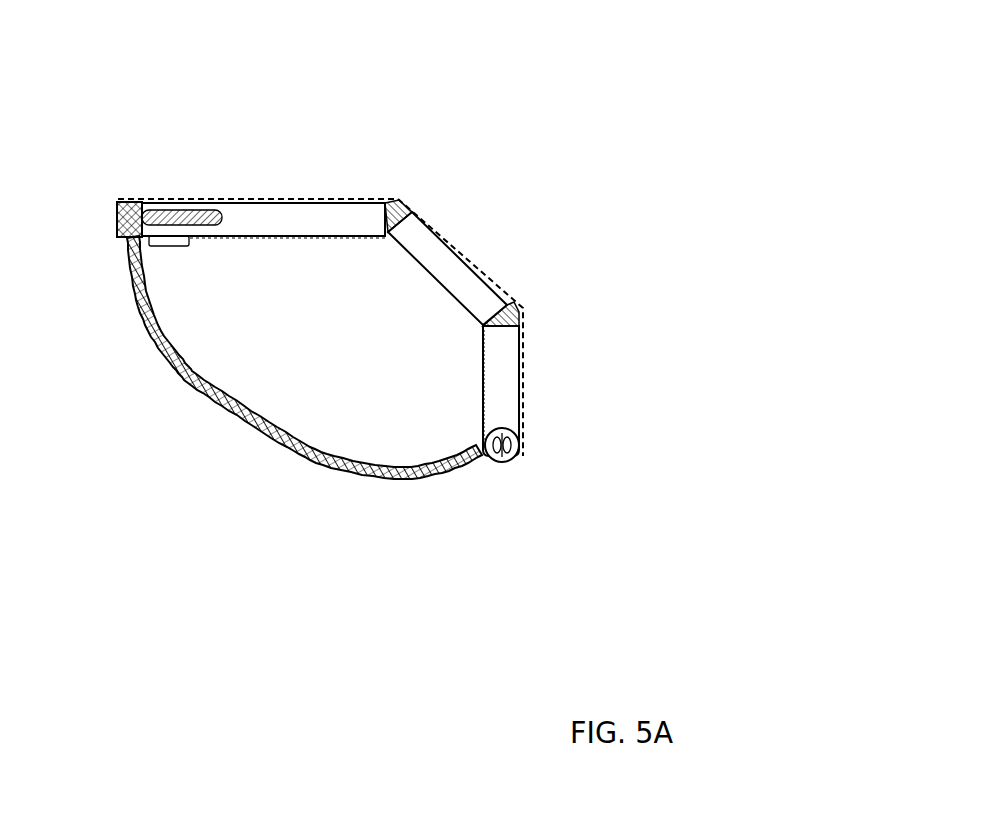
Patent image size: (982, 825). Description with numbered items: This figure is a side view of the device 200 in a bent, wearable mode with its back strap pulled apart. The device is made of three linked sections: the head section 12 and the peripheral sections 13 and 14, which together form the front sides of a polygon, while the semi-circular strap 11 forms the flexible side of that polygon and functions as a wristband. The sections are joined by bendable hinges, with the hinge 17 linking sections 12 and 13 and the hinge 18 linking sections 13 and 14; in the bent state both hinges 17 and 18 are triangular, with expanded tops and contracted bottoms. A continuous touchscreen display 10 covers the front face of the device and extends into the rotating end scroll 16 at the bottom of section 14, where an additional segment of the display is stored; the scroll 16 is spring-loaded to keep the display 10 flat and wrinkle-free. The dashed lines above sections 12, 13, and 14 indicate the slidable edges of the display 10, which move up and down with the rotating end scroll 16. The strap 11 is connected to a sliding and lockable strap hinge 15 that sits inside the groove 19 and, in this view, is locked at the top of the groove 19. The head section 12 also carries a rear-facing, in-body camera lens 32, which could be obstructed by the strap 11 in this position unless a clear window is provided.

The device 200 is at (504, 62).
The display 10 is at (454, 232).
The strap 11 is at (244, 433).
The head section 12 is at (283, 203).
The peripheral section 13 is at (450, 294).
The peripheral section 14 is at (483, 377).
The strap hinge 15 is at (117, 220).
The rotating end scroll 16 is at (488, 461).
The hinge 17 is at (398, 202).
The hinge 18 is at (518, 313).
The groove 19 is at (172, 212).
The camera lens 32 is at (167, 247).